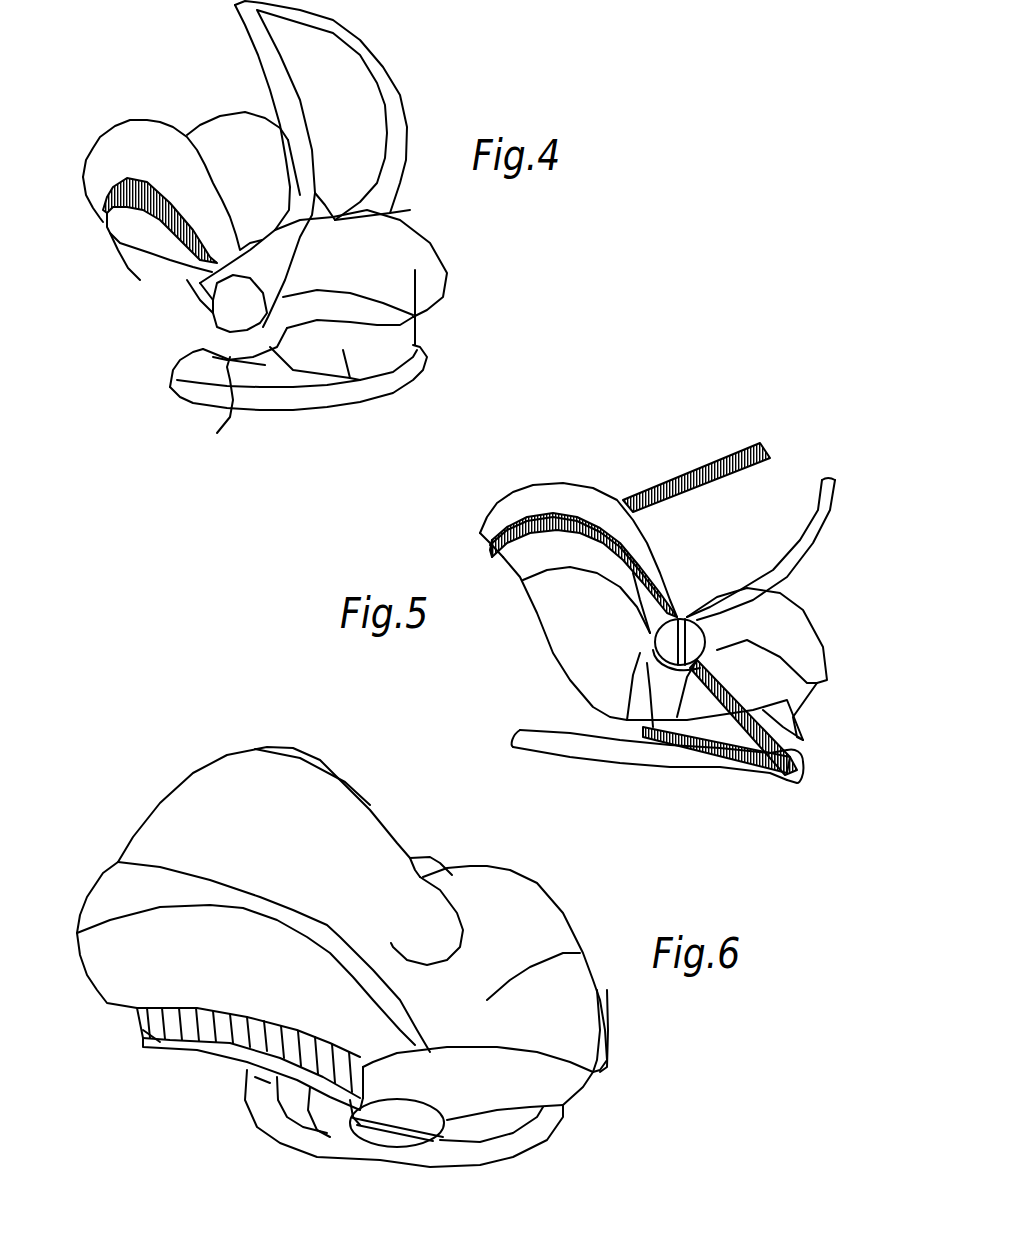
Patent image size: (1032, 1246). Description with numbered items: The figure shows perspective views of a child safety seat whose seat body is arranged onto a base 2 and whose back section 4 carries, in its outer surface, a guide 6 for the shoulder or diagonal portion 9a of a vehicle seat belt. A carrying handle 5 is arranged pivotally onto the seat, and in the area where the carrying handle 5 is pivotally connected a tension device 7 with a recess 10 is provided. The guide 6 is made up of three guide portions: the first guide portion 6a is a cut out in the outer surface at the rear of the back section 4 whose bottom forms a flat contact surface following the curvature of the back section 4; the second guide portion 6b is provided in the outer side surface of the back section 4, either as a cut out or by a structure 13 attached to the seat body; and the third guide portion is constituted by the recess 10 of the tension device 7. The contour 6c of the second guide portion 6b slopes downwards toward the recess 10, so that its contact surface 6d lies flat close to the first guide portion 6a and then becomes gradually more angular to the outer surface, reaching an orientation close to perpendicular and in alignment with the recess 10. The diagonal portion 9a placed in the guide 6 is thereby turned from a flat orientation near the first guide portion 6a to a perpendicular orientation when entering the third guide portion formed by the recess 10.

In FIG. 4, the base 2 is at (293, 400).
In FIG. 6, the base 2 is at (517, 1143).
In FIG. 4, the back section 4 is at (127, 135).
In FIG. 5, the back section 4 is at (578, 498).
In FIG. 6, the back section 4 is at (95, 975).
In FIG. 4, the carrying handle 5 is at (249, 30).
In FIG. 5, the carrying handle 5 is at (800, 543).
In FIG. 6, the carrying handle 5 is at (612, 1072).
In FIG. 5, the guide 6 is at (535, 520).
In FIG. 4, the first guide portion 6a is at (105, 222).
In FIG. 6, the first guide portion 6a is at (160, 1033).
In FIG. 4, the second guide portion 6b is at (143, 200).
In FIG. 6, the second guide portion 6b is at (322, 1060).
In FIG. 5, the contour (contact surface) of the second guide portion 6c is at (633, 575).
In FIG. 6, the flat contact surface 6d is at (147, 1040).
In FIG. 4, the tension device 7 is at (215, 404).
In FIG. 5, the diagonal portion 9a is at (507, 537).
In FIG. 4, the recess (third guide portion) 10 is at (233, 307).
In FIG. 6, the recess (third guide portion) 10 is at (407, 1137).
In FIG. 4, the structure 13 is at (139, 237).